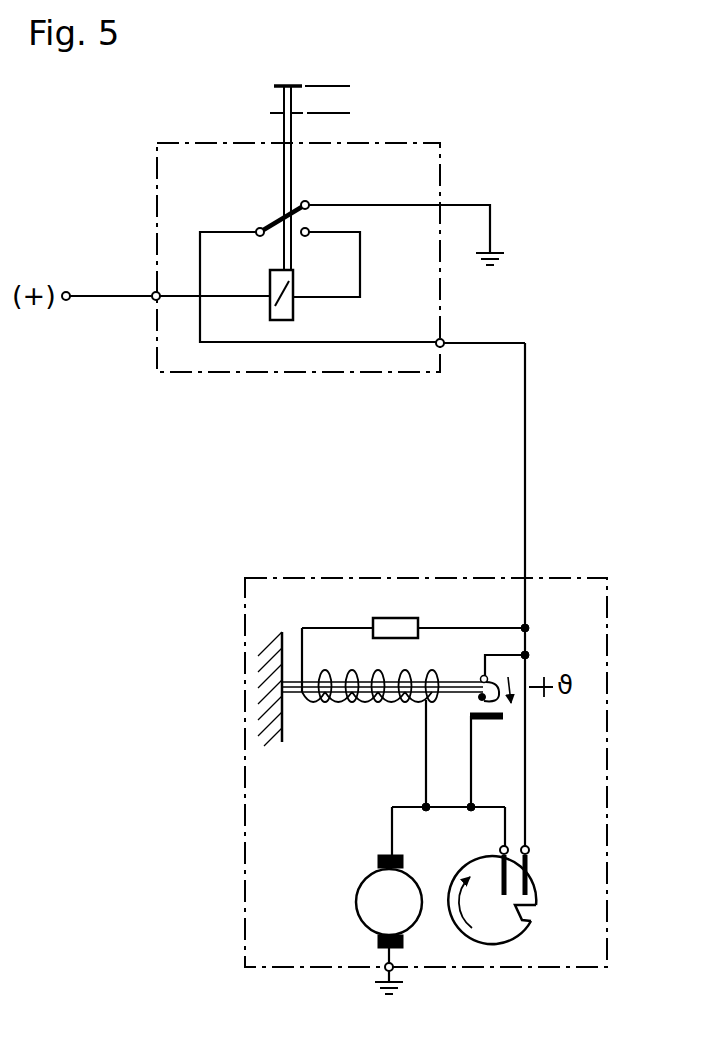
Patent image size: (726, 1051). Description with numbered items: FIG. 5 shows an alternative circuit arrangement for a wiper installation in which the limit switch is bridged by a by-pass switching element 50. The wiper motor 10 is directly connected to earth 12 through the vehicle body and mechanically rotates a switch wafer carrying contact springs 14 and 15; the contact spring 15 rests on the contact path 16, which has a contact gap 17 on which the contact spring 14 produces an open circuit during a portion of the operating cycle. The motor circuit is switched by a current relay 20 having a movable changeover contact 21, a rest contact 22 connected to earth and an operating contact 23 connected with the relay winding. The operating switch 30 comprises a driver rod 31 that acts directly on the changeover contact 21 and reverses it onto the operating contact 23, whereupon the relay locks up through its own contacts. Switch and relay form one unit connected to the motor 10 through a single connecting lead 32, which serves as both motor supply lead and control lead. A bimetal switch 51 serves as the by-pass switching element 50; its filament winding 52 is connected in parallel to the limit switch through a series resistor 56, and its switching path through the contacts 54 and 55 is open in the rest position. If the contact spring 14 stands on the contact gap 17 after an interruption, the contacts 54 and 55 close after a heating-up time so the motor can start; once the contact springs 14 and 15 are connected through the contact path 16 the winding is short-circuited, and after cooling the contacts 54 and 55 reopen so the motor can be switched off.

The wiper motor 10 is at (357, 917).
The earth 12 is at (378, 980).
The contact spring 14 is at (497, 868).
The contact spring 15 is at (530, 866).
The contact path 16 is at (504, 927).
The contact gap 17 is at (528, 914).
The current relay 20 is at (294, 308).
The changeover contact 21 is at (282, 217).
The rest contact 22 is at (307, 203).
The operating contact 23 is at (306, 237).
The operating switch 30 is at (384, 101).
The driver rod 31 is at (283, 132).
The connecting lead 32 is at (525, 523).
The by-pass switching element 50 is at (465, 623).
The bimetal switch 51 is at (292, 678).
The filament winding 52 is at (340, 704).
The contact 54 is at (503, 662).
The contact 55 is at (485, 724).
The series resistor 56 is at (405, 620).